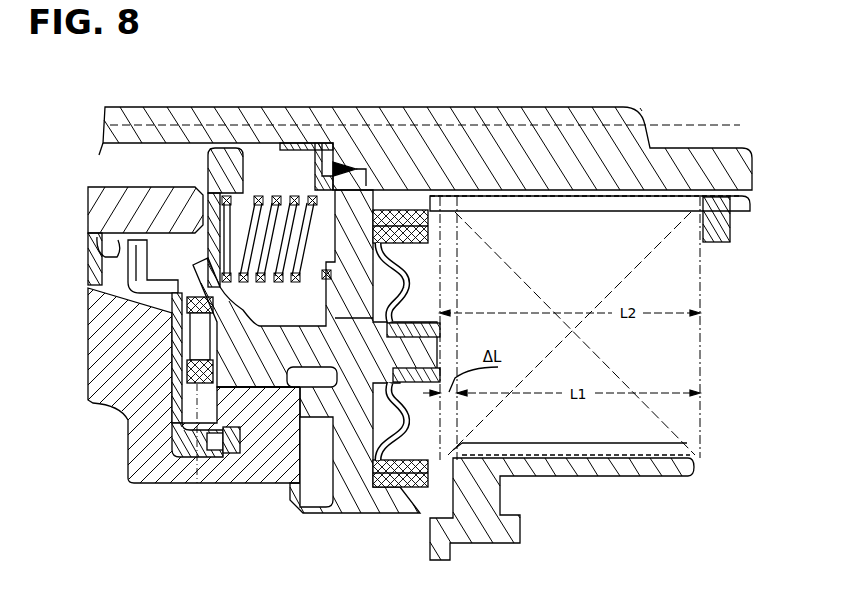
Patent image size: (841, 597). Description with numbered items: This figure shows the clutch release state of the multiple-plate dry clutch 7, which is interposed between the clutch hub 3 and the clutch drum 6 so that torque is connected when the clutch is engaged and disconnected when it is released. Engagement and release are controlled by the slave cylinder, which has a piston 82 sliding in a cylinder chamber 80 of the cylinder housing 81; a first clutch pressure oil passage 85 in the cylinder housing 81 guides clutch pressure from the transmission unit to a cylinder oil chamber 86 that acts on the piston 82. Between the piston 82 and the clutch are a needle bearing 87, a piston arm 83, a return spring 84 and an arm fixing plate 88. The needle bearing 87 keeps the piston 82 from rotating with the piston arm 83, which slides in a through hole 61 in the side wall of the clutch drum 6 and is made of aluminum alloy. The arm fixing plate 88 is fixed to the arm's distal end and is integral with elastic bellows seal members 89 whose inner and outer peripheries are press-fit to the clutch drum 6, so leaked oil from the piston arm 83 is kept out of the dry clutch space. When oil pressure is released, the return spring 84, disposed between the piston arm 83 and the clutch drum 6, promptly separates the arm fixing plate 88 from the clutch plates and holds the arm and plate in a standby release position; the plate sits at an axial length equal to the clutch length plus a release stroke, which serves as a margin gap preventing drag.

The clutch hub 3 is at (598, 478).
The clutch drum 6 is at (575, 106).
The multiple-plate dry clutch 7 is at (705, 337).
The through hole 61 is at (305, 398).
The cylinder chamber 80 is at (176, 226).
The cylinder housing 81 is at (176, 484).
The piston 82 is at (150, 375).
The piston arm 83 is at (258, 357).
The return spring 84 is at (300, 147).
The first clutch pressure oil passage 85 is at (86, 252).
The cylinder oil chamber 86 is at (118, 267).
The needle bearing 87 is at (196, 486).
The arm fixing plate 88 is at (440, 318).
The elastic bellows seal member 89 is at (437, 260).